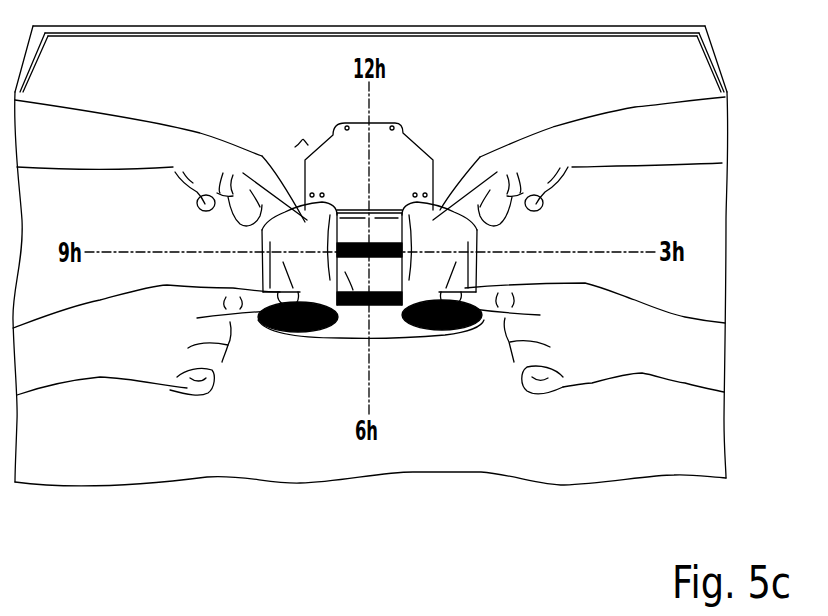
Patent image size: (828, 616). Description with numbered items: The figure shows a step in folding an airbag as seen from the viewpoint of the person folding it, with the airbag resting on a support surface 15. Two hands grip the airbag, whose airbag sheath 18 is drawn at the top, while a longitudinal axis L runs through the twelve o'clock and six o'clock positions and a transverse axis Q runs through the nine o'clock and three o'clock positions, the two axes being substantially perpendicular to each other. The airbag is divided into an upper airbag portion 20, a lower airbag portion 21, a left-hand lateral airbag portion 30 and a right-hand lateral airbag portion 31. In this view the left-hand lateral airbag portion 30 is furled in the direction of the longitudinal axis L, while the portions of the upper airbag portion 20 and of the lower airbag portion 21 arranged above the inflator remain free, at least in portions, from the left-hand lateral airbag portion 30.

The support surface 15 is at (668, 90).
The airbag sheath 18 is at (331, 157).
The upper airbag portion 20 is at (369, 226).
The lower airbag portion 21 is at (378, 282).
The left-hand lateral airbag portion 30 is at (294, 274).
The right-hand lateral airbag portion 31 is at (447, 265).
The transverse axis Q is at (102, 252).
The longitudinal axis L is at (373, 393).